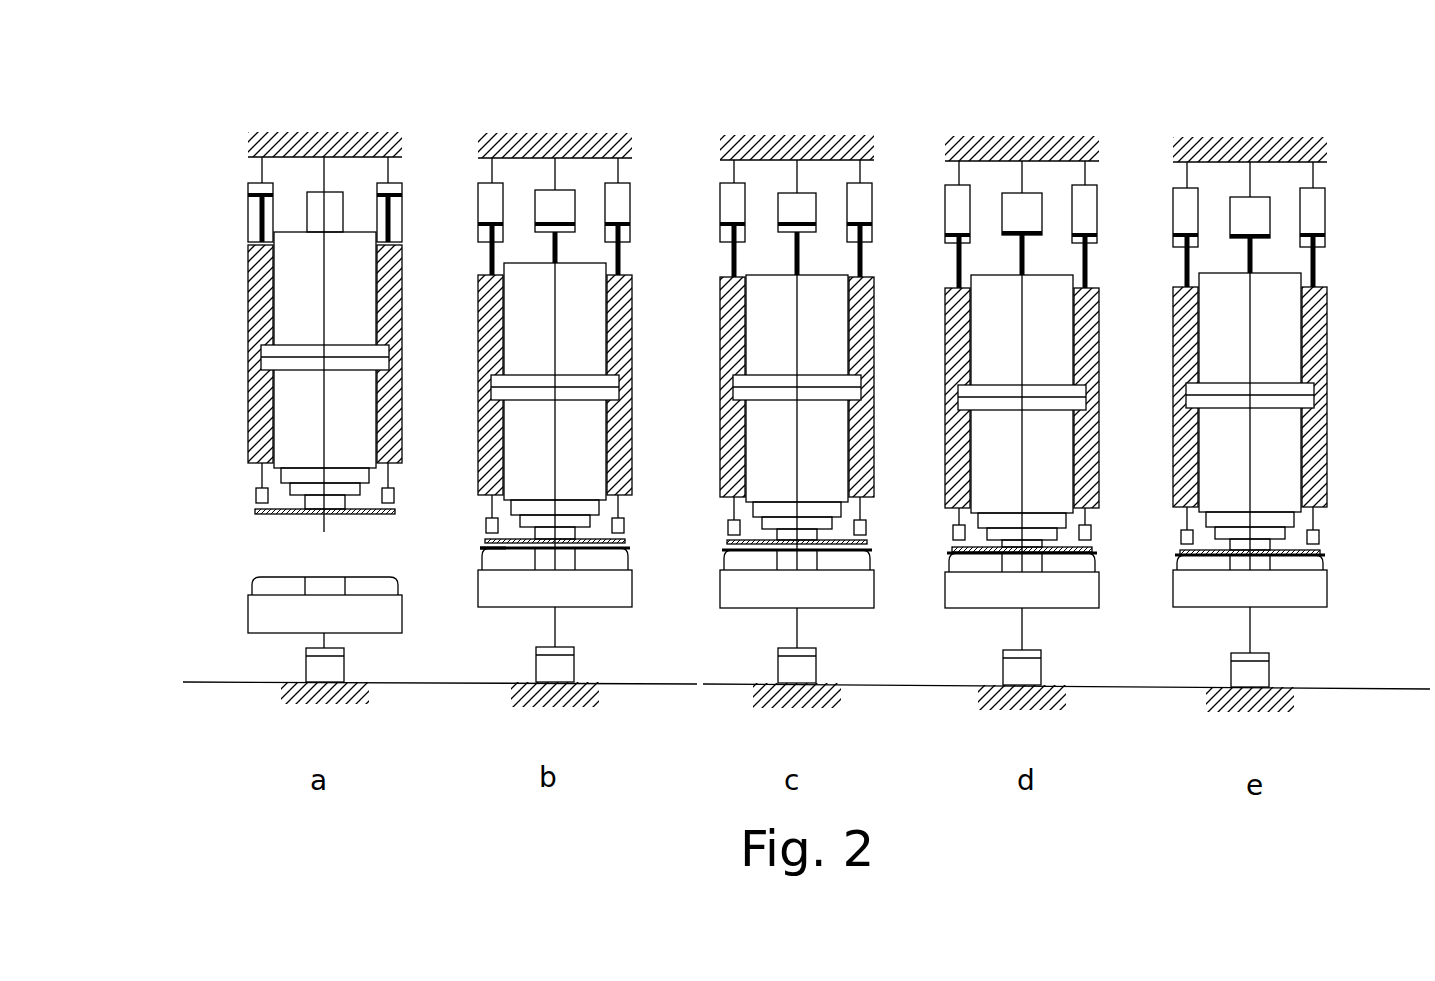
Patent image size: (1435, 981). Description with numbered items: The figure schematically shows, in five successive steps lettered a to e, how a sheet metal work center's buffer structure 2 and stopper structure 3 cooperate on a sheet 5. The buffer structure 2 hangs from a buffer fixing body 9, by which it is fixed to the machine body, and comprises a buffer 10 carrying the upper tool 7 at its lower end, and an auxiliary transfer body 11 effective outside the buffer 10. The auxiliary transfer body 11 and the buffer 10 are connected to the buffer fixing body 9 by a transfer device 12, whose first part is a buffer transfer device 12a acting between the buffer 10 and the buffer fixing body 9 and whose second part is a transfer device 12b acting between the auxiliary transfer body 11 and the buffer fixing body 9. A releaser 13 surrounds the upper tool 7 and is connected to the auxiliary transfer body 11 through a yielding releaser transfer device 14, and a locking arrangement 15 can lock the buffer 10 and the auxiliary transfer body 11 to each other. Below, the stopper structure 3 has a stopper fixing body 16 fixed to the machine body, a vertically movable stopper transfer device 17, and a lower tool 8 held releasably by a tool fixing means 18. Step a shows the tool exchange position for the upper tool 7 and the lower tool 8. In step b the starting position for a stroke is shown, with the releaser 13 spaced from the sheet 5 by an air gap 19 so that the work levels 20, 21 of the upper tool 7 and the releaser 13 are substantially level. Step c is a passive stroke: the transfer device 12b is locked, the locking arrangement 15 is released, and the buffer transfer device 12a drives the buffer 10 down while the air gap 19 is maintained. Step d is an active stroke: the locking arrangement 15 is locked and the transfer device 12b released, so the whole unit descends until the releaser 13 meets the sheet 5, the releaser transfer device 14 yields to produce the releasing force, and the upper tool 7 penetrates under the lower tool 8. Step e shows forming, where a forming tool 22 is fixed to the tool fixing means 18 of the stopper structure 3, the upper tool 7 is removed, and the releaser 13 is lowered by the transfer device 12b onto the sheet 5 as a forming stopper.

The buffer structure 2 is at (246, 250).
The stopper structure 3 is at (231, 603).
The sheet 5 is at (722, 551).
The upper tool 7 is at (313, 515).
The lower tool 8 is at (263, 577).
The buffer fixing body 9 is at (313, 141).
The buffer 10 is at (313, 400).
The auxiliary transfer body 11 is at (255, 433).
The transfer device 12 is at (348, 177).
The buffer transfer device 12a is at (312, 197).
The transfer device for the auxiliary transfer body 12b is at (255, 218).
The releaser 13 is at (277, 502).
The releaser transfer device 14 is at (480, 518).
The locking arrangement 15 is at (275, 350).
The stopper fixing body 16 is at (316, 686).
The stopper transfer device 17 is at (347, 671).
The tool fixing means 18 is at (1235, 587).
The air gap 19 is at (488, 548).
The work level of the upper tool 20 is at (537, 557).
The work level of the releaser 21 is at (597, 557).
The forming tool 22 is at (1245, 553).